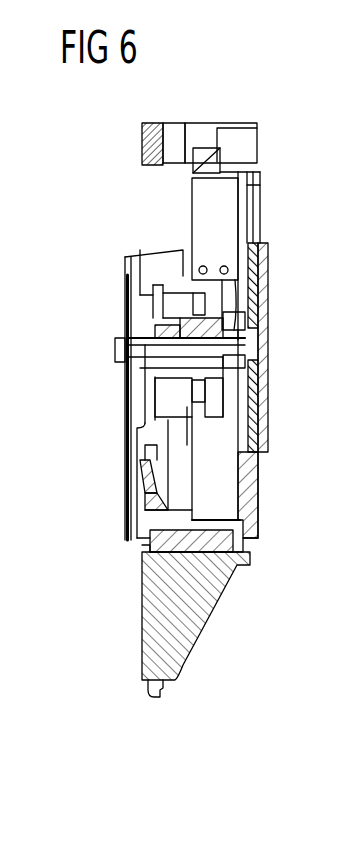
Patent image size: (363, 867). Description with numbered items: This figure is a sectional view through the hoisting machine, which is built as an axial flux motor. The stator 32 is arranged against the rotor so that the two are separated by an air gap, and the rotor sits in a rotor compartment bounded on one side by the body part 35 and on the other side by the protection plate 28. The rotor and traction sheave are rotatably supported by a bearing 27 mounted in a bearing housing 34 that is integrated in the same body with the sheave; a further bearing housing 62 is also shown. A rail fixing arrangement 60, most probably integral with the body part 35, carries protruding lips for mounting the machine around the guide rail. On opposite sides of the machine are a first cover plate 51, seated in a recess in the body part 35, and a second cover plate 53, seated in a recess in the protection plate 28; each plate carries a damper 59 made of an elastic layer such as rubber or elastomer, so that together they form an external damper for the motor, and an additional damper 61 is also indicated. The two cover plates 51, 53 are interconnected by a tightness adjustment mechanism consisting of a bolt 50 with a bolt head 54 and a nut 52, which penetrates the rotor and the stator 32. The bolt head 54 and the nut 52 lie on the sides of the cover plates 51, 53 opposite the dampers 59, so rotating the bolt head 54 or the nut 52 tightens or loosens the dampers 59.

The stator 32 is at (200, 202).
The bearing 27 is at (141, 280).
The bearing housing 34 is at (190, 300).
The bearing housing 62 is at (162, 340).
The bolt head 54 is at (118, 349).
The bolt 50 is at (140, 356).
The cover plate 53 is at (125, 415).
The damper 59 is at (130, 453).
The protection plate 28 is at (138, 526).
The nut 52 is at (262, 343).
The cover plate 51 is at (262, 403).
The body part 35 is at (250, 478).
The damper 61 is at (218, 574).
The rail fixing arrangement 60 is at (196, 624).